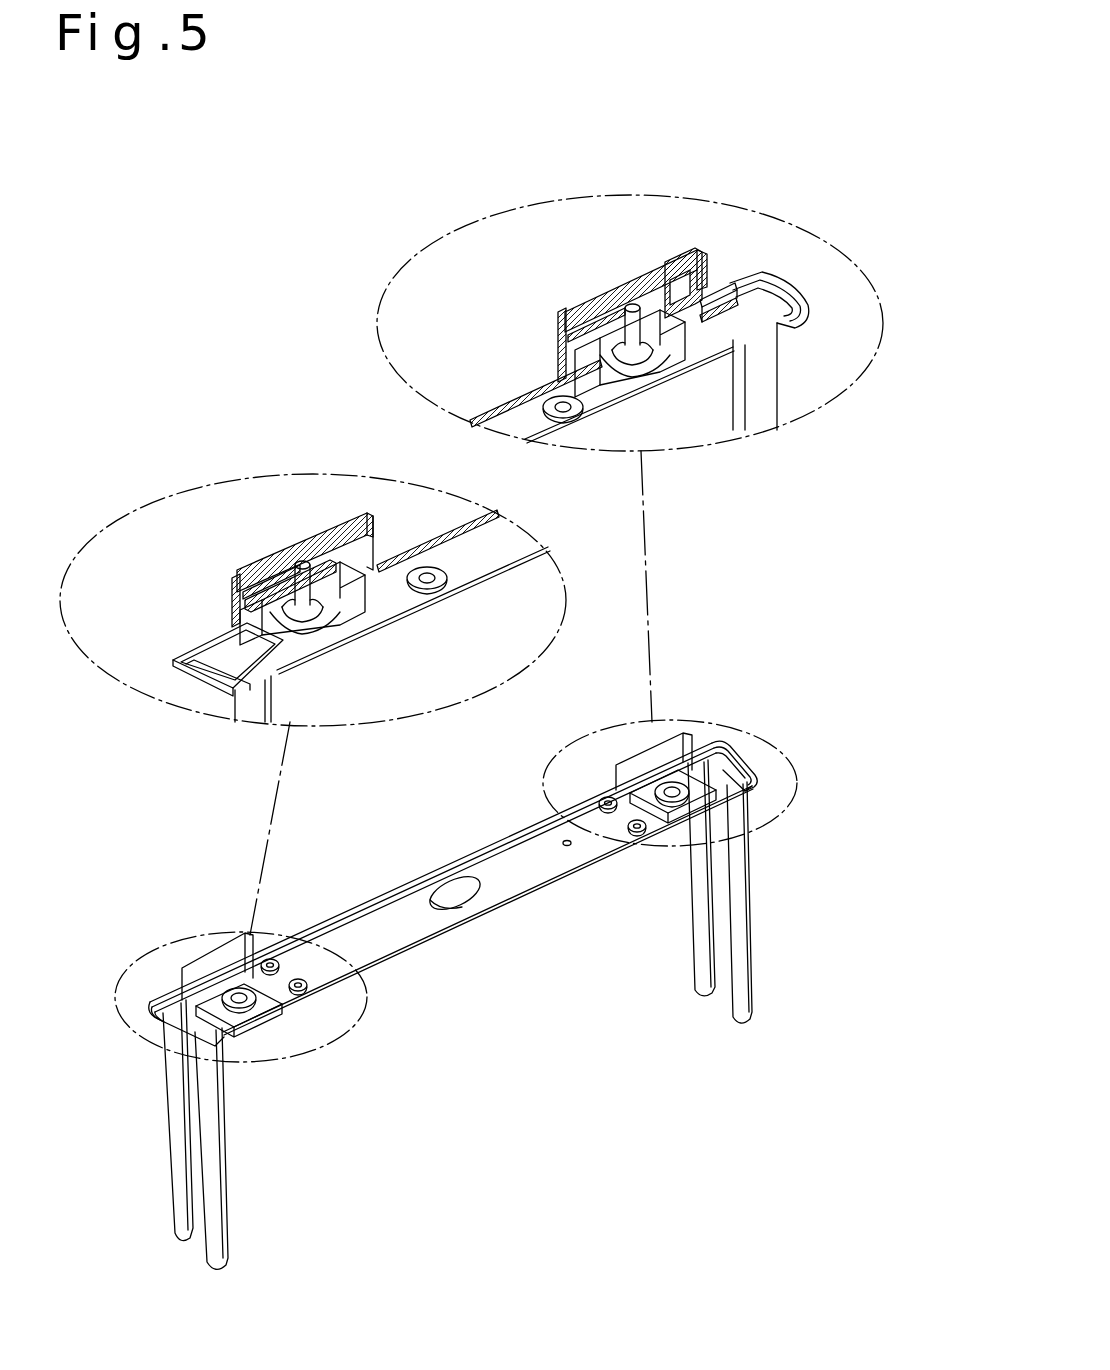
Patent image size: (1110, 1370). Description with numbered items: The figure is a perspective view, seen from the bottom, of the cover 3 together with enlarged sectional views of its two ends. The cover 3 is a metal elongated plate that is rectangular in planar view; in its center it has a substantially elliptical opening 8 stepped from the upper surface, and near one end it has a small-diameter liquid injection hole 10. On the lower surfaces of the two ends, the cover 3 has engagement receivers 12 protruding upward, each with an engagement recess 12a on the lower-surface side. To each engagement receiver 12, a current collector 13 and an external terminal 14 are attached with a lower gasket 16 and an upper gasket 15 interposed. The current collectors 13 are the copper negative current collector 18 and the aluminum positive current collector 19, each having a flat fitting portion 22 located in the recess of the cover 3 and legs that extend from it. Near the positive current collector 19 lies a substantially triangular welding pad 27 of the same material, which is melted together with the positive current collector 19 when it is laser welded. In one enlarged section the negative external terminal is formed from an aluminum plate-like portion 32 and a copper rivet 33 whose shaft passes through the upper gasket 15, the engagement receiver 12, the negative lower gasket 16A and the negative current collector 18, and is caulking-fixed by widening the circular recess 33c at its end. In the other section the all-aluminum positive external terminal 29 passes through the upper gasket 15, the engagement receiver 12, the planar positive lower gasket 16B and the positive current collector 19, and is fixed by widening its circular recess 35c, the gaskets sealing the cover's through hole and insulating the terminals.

The cover 3 is at (392, 932).
The opening 8 is at (463, 905).
The liquid injection hole 10 is at (567, 847).
The engagement receiver 12 is at (235, 603).
The engagement recess 12a is at (347, 613).
The current collector 13 is at (463, 796).
The external terminal 14 is at (627, 244).
The upper gasket 15 is at (230, 592).
The lower gasket 16 is at (471, 456).
The negative lower gasket 16A is at (293, 550).
The positive lower gasket 16B is at (657, 290).
The negative current collector 18 is at (220, 1155).
The positive current collector 19 is at (703, 957).
The fitting portion 22 is at (705, 278).
The welding pad 27 is at (733, 757).
The positive external terminal 29 is at (590, 277).
The plate-like portion 32 is at (262, 567).
The rivet 33 is at (293, 545).
The circular recess 33c is at (300, 588).
The circular recess 35c is at (633, 332).